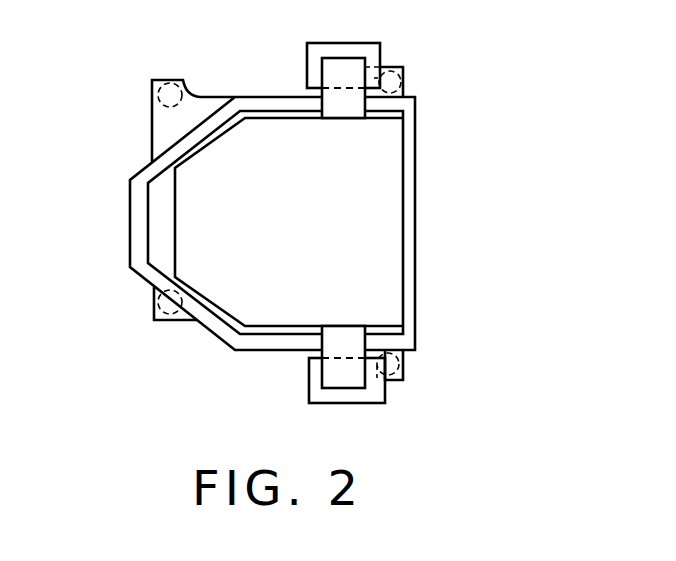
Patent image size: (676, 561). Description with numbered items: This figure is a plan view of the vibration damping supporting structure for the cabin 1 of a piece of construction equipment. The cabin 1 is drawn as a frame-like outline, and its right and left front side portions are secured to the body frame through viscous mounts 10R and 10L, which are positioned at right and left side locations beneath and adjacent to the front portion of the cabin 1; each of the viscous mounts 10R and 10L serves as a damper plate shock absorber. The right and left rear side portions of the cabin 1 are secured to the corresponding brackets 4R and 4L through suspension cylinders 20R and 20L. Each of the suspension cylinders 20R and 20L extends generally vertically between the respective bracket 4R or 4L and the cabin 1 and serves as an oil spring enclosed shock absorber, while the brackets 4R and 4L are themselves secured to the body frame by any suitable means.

The cabin 1 is at (228, 337).
The viscous mount 10R is at (162, 86).
The viscous mount 10L is at (160, 310).
The suspension cylinder 20R is at (405, 75).
The suspension cylinder 20L is at (404, 367).
The bracket 4R is at (338, 65).
The bracket 4L is at (332, 380).